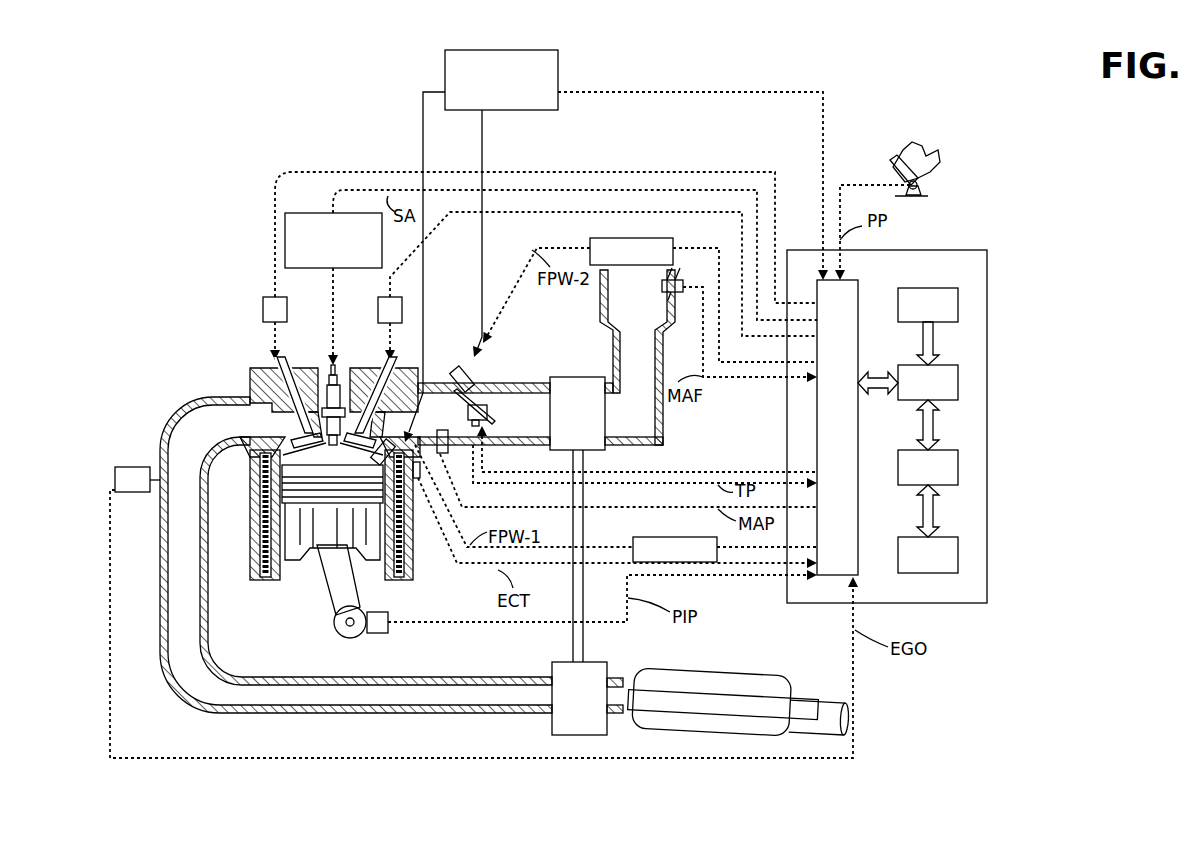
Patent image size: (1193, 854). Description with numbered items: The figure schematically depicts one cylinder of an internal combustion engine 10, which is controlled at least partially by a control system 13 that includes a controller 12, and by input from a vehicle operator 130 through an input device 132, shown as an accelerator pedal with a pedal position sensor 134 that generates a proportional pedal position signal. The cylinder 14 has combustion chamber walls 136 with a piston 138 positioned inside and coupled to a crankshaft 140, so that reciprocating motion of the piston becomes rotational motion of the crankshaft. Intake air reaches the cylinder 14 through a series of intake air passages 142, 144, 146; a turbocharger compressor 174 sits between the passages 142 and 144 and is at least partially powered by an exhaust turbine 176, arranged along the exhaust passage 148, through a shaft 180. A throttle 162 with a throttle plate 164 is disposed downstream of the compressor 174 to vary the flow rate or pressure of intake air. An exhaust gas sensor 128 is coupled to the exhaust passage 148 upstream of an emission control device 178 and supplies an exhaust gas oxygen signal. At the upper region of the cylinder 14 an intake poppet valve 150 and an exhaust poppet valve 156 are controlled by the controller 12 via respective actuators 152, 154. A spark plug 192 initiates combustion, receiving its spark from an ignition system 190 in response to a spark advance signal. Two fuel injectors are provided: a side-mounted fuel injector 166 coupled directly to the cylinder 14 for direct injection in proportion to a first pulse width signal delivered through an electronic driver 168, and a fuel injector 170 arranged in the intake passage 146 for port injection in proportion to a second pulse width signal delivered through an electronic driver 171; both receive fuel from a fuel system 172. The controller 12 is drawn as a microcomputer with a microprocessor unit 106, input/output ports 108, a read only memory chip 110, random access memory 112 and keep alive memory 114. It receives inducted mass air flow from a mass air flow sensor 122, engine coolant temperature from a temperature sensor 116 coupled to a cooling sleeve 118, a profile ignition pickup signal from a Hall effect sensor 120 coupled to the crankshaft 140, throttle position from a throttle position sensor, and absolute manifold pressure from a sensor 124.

The internal combustion engine 10 is at (190, 328).
The controller 12 is at (923, 422).
The control system 13 is at (1068, 318).
The cylinder 14 is at (250, 470).
The microprocessor unit 106 is at (958, 373).
The input/output ports 108 is at (858, 288).
The read only memory chip 110 is at (958, 300).
The random access memory 112 is at (958, 460).
The keep alive memory 114 is at (958, 548).
The temperature sensor 116 is at (412, 545).
The cooling sleeve 118 is at (416, 545).
The Hall effect sensor 120 is at (388, 633).
The mass air flow sensor 122 is at (683, 282).
The manifold pressure sensor 124 is at (445, 455).
The exhaust gas sensor 128 is at (115, 474).
The vehicle operator 130 is at (940, 153).
The input device 132 is at (892, 167).
The pedal position sensor 134 is at (926, 188).
The combustion chamber walls 136 is at (282, 580).
The piston 138 is at (318, 572).
The crankshaft 140 is at (338, 636).
The intake air passage 142 is at (655, 313).
The intake air passage 144 is at (535, 421).
The intake air passage 146 is at (450, 421).
The exhaust passage 148 is at (237, 430).
The intake poppet valve 150 is at (362, 398).
The actuator 152 is at (380, 313).
The actuator 154 is at (263, 310).
The exhaust poppet valve 156 is at (272, 405).
The throttle 162 is at (479, 389).
The throttle plate 164 is at (454, 390).
The fuel injector 166 is at (502, 482).
The electronic driver 168 is at (633, 540).
The fuel injector 170 is at (467, 371).
The electronic driver 171 is at (590, 240).
The fuel system 172 is at (558, 56).
The compressor 174 is at (573, 377).
The exhaust turbine 176 is at (552, 718).
The emission control device 178 is at (705, 672).
The shaft 180 is at (580, 630).
The ignition system 190 is at (298, 212).
The spark plug 192 is at (326, 386).